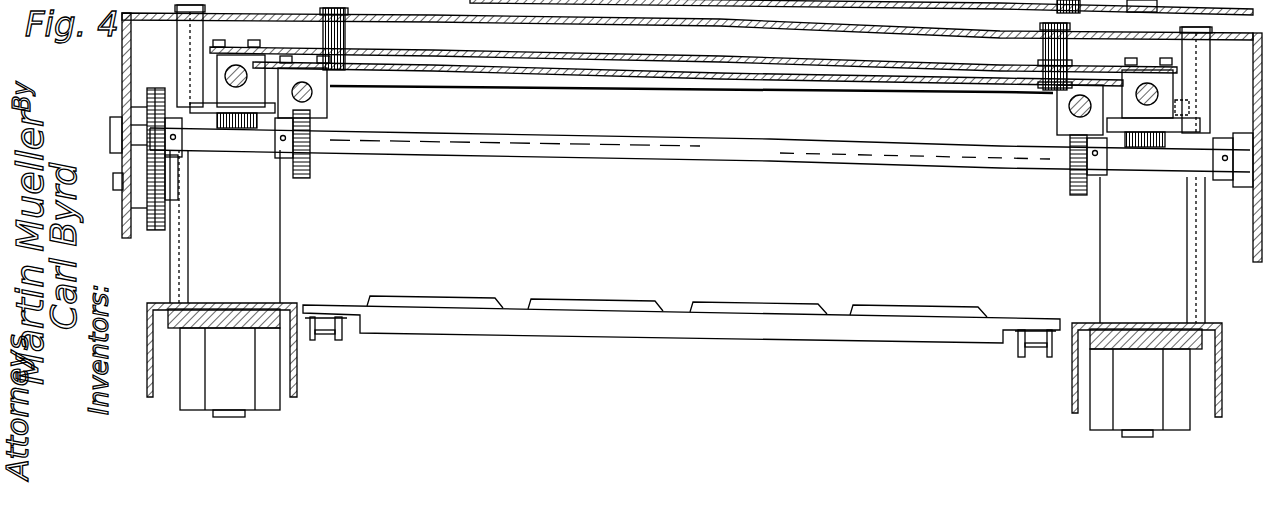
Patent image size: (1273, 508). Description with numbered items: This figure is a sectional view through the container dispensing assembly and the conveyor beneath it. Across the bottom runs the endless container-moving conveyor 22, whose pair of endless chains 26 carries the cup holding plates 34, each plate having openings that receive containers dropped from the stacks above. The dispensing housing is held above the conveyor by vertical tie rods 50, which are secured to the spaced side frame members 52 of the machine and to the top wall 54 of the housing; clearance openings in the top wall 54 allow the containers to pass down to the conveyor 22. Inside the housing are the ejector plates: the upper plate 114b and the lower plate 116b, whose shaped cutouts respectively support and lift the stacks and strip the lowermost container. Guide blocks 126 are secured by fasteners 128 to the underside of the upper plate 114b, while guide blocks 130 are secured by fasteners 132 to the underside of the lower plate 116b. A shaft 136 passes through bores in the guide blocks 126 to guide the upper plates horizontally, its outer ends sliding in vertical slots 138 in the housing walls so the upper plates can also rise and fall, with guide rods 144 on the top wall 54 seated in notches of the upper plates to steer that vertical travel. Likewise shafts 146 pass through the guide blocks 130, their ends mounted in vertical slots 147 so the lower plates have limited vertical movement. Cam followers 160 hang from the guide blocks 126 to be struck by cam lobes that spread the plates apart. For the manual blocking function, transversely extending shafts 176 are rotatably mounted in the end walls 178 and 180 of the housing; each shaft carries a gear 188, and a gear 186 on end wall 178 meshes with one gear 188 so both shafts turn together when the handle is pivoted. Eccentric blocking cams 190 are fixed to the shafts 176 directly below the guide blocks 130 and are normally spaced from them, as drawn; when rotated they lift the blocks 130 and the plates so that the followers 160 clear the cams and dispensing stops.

The endless container-moving conveyor 22 is at (680, 352).
The endless chains 26 is at (325, 348).
The cup holding plates 34 is at (784, 330).
The vertical tie rods 50 is at (177, 33).
The side frame members 52 is at (148, 357).
The top wall 54 is at (705, 27).
The upper plate 114b is at (813, 62).
The lower plate 116b is at (742, 78).
The guide blocks 126 is at (218, 62).
The fasteners 128 is at (228, 46).
The guide blocks 130 is at (323, 105).
The fasteners 132 is at (318, 50).
The shaft 136 is at (224, 76).
The vertical slots 138 is at (1180, 107).
The guide rods 144 is at (349, 17).
The shafts 146 is at (316, 93).
The vertical slots 147 is at (327, 130).
The cam followers 160 is at (235, 122).
The transversely extending shafts 176 is at (730, 150).
The end wall 178 is at (125, 232).
The end wall 180 is at (1250, 222).
The gear 186 is at (165, 224).
The gear 188 is at (147, 97).
The eccentric blocking cams 190 is at (311, 176).